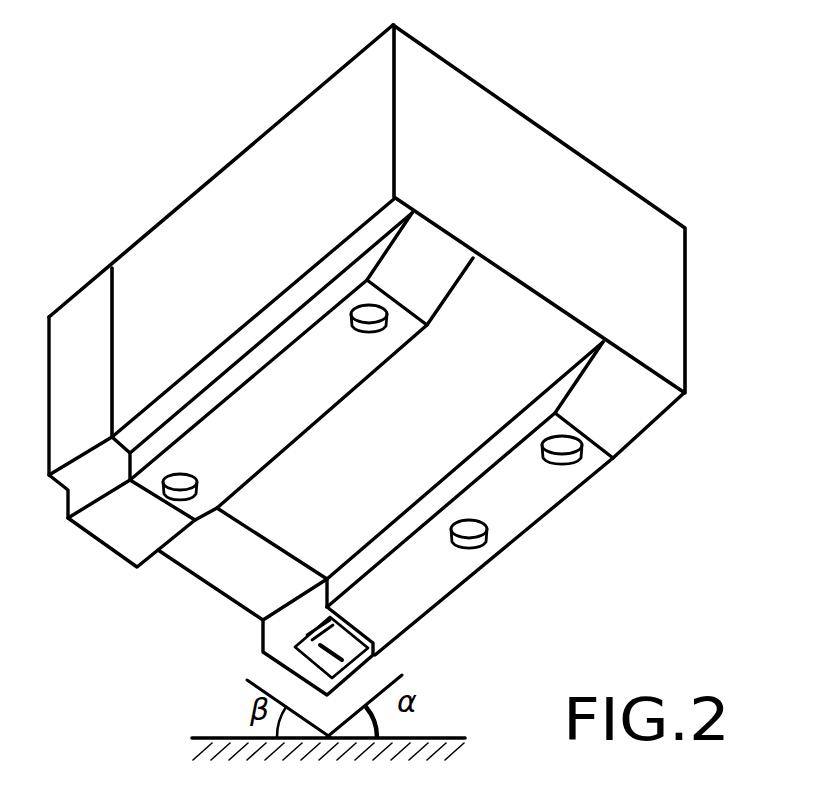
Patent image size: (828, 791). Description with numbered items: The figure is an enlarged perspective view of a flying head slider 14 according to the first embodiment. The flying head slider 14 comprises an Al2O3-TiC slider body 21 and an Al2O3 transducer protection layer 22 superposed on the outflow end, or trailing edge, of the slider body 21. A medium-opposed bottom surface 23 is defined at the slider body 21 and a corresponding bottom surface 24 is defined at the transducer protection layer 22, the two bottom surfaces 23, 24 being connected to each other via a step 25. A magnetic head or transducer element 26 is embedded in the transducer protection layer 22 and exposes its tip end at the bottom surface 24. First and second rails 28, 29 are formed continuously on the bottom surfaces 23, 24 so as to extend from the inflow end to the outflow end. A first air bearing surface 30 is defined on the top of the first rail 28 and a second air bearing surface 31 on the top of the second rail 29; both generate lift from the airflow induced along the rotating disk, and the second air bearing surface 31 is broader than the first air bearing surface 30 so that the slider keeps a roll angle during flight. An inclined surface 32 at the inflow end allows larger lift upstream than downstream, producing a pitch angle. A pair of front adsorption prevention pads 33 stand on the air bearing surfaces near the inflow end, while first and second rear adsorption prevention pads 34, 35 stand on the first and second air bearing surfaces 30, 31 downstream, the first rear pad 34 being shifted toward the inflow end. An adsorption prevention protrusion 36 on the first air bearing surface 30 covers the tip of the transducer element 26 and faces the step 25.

The flying head slider 14 is at (437, 46).
The slider body 21 is at (163, 234).
The transducer protection layer 22 is at (88, 298).
The bottom surface 23 is at (439, 433).
The bottom surface 24 is at (248, 573).
The step 25 is at (280, 556).
The transducer element 26 is at (340, 642).
The first rail 28 is at (410, 512).
The second rail 29 is at (232, 377).
The first air bearing surface 30 is at (528, 508).
The second air bearing surface 31 is at (303, 410).
The inclined surface 32 is at (430, 287).
The front adsorption prevention pads 33 is at (360, 336).
The first rear adsorption prevention pad 34 is at (473, 553).
The second rear adsorption prevention pad 35 is at (184, 475).
The adsorption prevention protrusion 36 is at (285, 673).